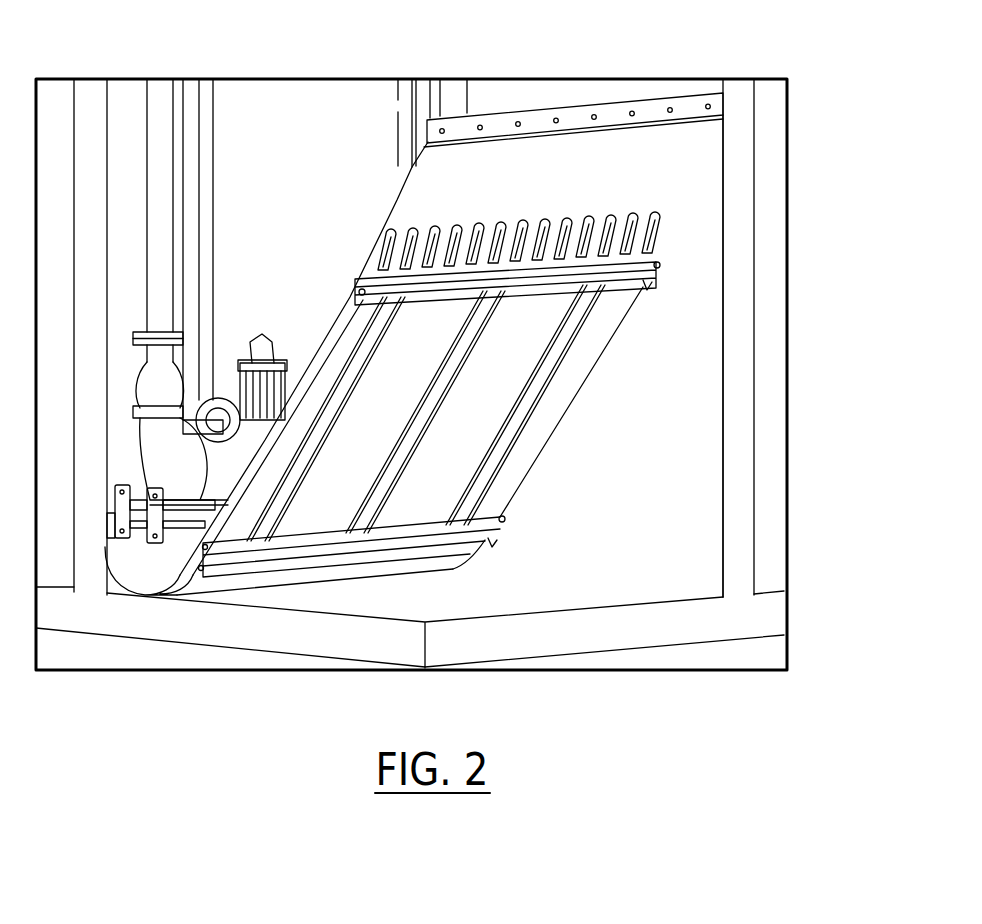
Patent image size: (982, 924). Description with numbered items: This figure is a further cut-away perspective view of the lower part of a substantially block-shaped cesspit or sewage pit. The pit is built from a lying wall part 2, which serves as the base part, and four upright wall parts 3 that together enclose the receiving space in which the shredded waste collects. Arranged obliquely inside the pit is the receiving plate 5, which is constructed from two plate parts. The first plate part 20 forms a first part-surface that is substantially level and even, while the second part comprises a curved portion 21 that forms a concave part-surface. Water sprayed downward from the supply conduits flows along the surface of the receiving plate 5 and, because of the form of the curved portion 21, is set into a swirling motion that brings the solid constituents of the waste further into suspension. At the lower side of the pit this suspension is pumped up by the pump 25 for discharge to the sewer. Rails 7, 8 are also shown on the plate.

The lying wall part 2 is at (633, 620).
The upright wall parts 3 is at (738, 452).
The receiving plate 5 is at (583, 120).
The upper rail 7 is at (653, 270).
The lower rail 8 is at (504, 521).
The first plate part 20 is at (462, 443).
The curved portion 21 is at (155, 578).
The pump 25 is at (277, 360).